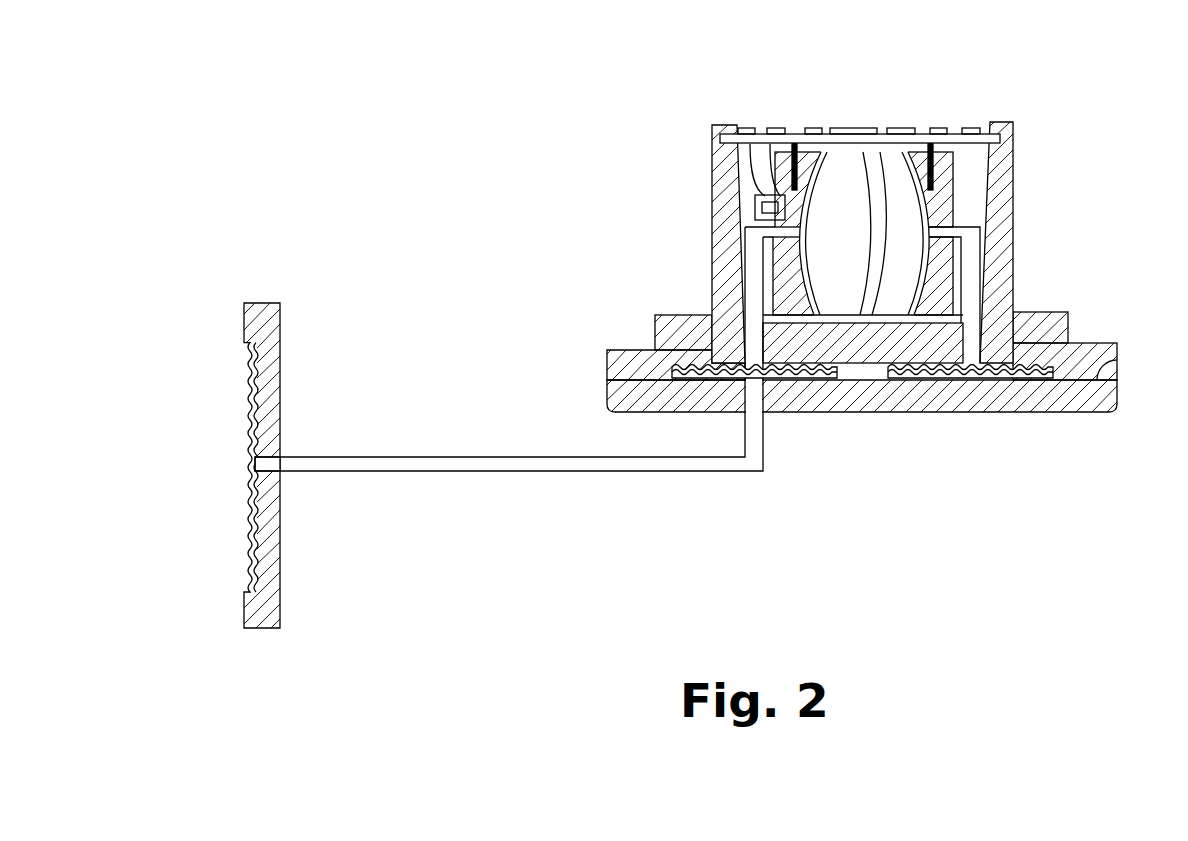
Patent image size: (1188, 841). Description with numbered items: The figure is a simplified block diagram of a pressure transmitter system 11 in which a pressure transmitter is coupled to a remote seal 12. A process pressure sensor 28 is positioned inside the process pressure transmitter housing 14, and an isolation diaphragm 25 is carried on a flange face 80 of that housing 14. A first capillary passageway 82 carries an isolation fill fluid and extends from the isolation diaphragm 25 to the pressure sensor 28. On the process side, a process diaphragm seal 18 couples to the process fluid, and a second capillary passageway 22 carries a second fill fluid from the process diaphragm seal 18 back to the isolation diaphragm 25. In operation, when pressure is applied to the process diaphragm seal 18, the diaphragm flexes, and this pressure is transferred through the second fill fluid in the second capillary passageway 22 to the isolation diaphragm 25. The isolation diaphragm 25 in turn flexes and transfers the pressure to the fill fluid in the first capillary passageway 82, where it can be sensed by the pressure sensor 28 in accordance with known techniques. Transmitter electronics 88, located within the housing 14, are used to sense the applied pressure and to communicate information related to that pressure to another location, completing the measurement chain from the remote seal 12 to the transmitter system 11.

The pressure transmitter system 11 is at (818, 262).
The remote seal 12 is at (454, 393).
The process pressure transmitter housing 14 is at (1013, 136).
The process diaphragm seal 18 is at (243, 392).
The second capillary passageway 22 is at (530, 473).
The isolation diaphragm 25 is at (792, 382).
The process pressure sensor 28 is at (955, 195).
The flange face 80 is at (1118, 353).
The first capillary passageway 82 is at (752, 270).
The transmitter electronics 88 is at (865, 128).